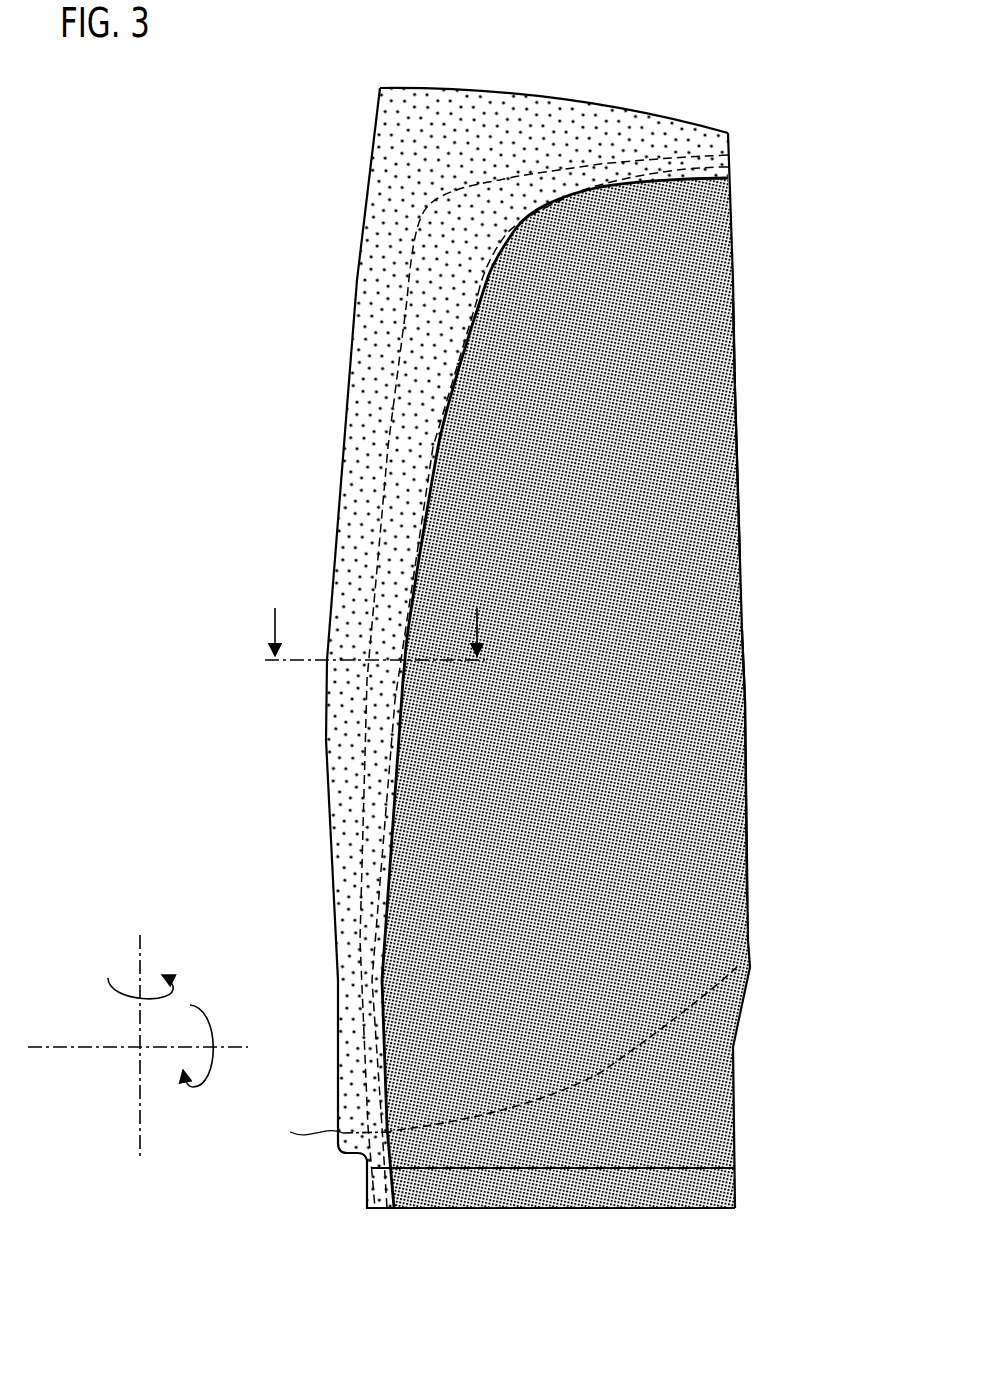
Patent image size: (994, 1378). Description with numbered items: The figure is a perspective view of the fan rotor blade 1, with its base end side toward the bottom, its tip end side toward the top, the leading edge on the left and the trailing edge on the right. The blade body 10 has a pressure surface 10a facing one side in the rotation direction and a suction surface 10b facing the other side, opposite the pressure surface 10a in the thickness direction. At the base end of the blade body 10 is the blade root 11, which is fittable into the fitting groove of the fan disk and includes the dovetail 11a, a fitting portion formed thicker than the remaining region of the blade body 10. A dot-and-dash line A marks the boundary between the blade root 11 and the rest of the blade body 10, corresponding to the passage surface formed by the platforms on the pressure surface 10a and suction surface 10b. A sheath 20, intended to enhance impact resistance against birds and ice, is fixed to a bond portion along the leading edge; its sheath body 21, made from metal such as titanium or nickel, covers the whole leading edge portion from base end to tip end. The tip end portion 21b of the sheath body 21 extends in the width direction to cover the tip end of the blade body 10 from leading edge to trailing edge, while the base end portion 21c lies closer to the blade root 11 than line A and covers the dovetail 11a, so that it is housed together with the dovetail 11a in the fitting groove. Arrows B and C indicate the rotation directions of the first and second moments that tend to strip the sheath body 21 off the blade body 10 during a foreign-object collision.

The fan rotor blade 1 is at (352, 74).
The blade body 10 is at (740, 502).
The pressure surface 10a is at (693, 415).
The suction surface 10b is at (682, 592).
The blade root 11 is at (790, 977).
The dovetail 11a is at (738, 1185).
The sheath 20 is at (364, 230).
The sheath body 21 is at (544, 681).
The tip end portion 21b is at (557, 103).
The base end portion 21c is at (378, 1209).